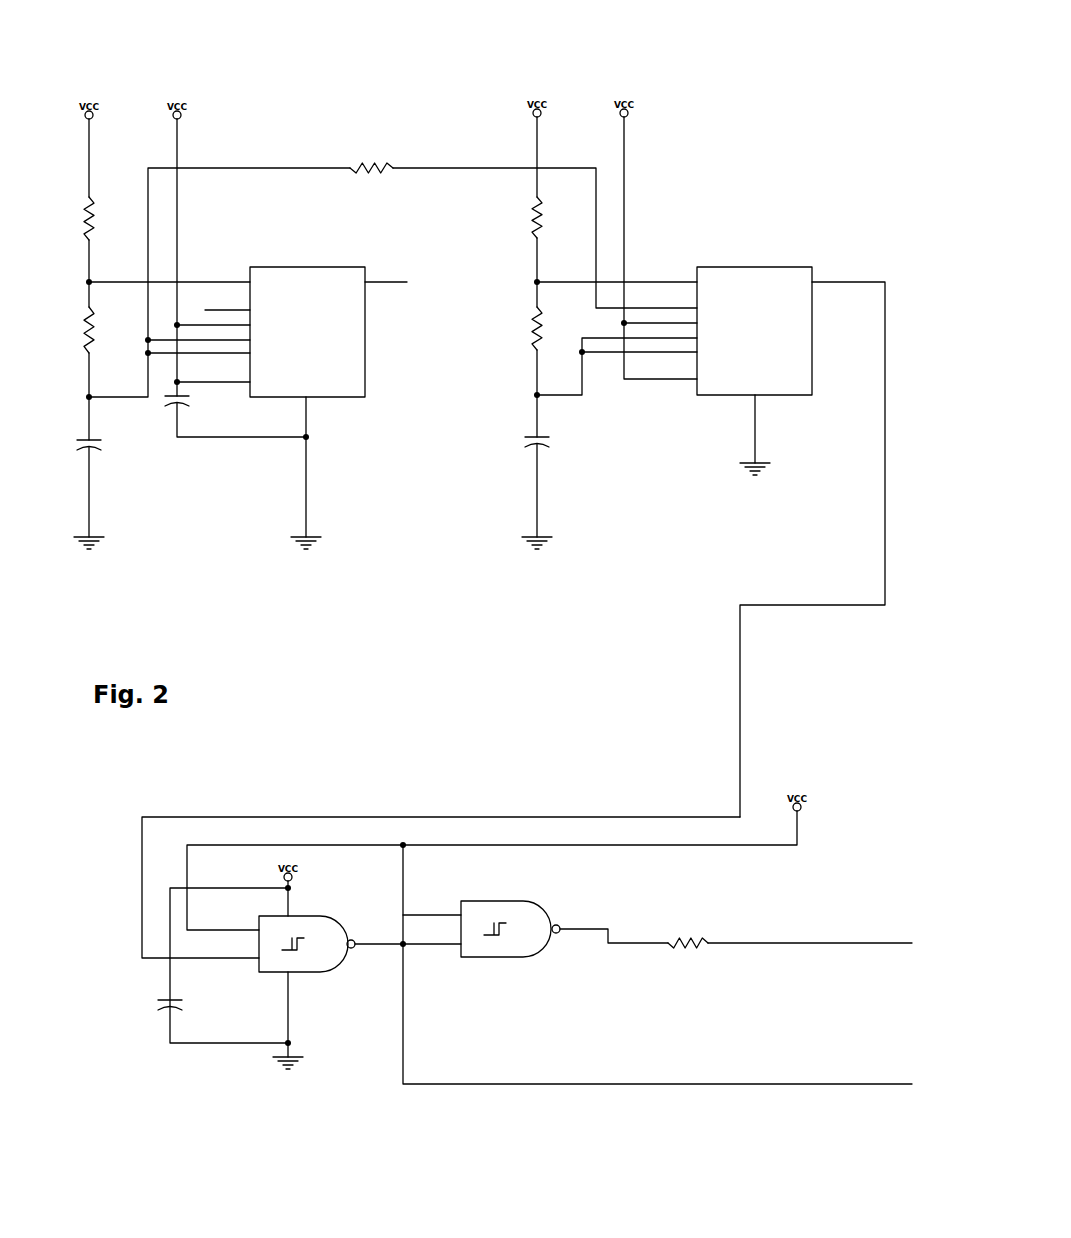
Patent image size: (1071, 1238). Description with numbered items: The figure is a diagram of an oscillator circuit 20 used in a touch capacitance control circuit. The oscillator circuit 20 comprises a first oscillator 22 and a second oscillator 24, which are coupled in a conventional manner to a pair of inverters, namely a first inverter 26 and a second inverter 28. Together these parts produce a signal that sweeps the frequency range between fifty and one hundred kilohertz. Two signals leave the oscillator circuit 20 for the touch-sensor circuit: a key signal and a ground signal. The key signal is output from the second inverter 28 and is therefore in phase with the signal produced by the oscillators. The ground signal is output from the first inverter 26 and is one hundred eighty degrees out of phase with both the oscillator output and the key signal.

The oscillator circuit 20 is at (760, 104).
The first oscillator 22 is at (345, 397).
The second oscillator 24 is at (788, 395).
The first inverter 26 is at (302, 972).
The second inverter 28 is at (497, 957).